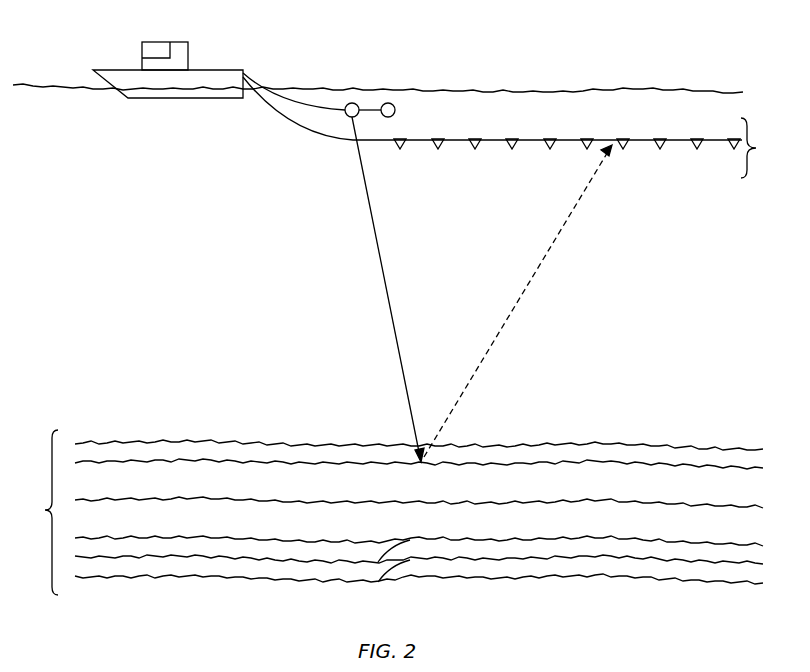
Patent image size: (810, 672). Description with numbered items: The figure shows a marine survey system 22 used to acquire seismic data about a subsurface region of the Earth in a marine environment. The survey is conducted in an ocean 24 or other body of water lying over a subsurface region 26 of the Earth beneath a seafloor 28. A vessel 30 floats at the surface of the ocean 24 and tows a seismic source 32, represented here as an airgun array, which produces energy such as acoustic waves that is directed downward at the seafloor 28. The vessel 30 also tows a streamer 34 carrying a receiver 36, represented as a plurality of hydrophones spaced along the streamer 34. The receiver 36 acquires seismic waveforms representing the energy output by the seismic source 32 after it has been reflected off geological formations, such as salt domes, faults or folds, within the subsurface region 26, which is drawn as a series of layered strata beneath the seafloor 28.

The marine survey system 22 is at (627, 38).
The ocean 24 is at (301, 286).
The subsurface region 26 is at (47, 510).
The seafloor 28 is at (205, 442).
The vessel 30 is at (182, 44).
The seismic source 32 is at (352, 103).
The streamer 34 is at (512, 127).
The receiver 36 is at (441, 139).